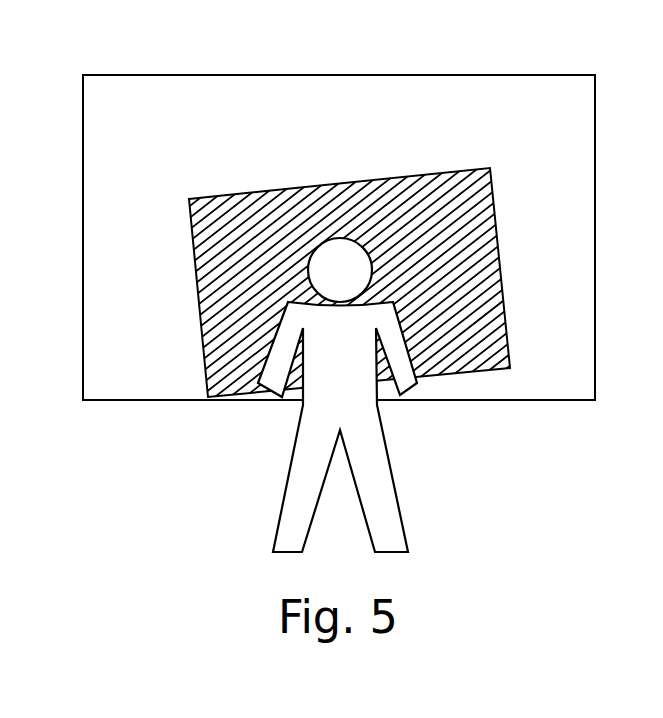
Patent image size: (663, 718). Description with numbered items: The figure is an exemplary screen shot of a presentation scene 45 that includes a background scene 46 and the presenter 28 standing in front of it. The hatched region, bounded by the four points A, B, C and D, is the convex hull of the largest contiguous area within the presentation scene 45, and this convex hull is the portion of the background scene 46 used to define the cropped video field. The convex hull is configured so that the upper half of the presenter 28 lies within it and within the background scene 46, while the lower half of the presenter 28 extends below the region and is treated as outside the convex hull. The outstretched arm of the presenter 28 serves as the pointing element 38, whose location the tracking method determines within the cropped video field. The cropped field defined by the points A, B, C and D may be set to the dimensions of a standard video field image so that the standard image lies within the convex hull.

The presentation scene 45 is at (72, 88).
The background scene 46 is at (182, 227).
The pointing element 38 is at (250, 380).
The presenter 28 is at (266, 527).